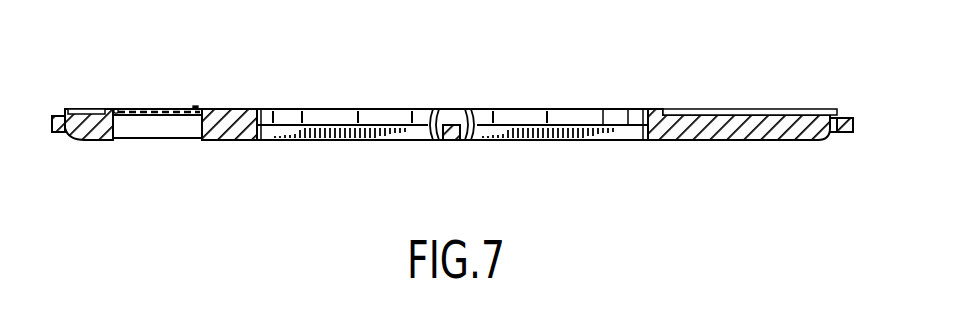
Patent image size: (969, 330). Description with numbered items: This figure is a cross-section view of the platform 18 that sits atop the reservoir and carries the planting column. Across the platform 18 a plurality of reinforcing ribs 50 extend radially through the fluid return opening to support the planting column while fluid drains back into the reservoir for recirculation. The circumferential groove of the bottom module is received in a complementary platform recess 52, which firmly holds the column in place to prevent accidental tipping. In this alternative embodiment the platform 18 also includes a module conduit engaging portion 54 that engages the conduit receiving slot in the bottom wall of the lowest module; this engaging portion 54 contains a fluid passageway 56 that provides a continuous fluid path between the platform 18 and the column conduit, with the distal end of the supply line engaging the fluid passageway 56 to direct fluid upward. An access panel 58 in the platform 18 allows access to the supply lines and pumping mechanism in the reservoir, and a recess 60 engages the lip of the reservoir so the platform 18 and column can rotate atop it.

The platform 18 is at (727, 140).
The reinforcing ribs 50 is at (562, 108).
The platform recess 52 is at (270, 108).
The module conduit engaging portion 54 is at (458, 108).
The fluid passageway 56 is at (455, 137).
The access panel 58 is at (158, 108).
The recess 60 is at (70, 122).